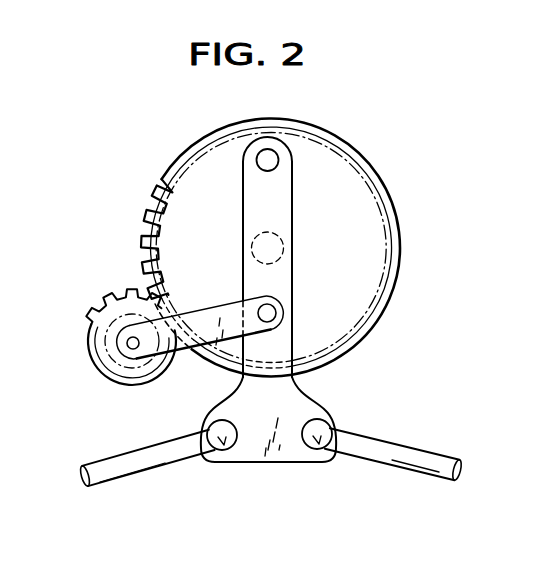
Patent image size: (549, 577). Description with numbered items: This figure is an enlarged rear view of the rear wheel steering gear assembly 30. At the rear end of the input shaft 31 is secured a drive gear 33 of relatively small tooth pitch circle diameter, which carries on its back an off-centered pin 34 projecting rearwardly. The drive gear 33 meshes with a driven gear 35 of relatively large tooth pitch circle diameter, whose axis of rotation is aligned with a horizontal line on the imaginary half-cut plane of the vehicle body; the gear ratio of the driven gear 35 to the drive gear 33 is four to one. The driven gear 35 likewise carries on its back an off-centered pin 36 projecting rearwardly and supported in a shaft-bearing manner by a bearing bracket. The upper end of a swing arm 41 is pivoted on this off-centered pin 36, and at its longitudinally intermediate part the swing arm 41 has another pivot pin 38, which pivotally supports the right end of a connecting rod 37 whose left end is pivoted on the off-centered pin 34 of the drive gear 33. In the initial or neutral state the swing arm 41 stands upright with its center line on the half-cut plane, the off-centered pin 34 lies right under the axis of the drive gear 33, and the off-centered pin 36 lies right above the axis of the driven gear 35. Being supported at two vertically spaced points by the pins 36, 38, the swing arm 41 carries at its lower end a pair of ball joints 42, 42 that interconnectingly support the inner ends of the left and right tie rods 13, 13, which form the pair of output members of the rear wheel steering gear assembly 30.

The rear wheel steering gear assembly 30 is at (154, 160).
The input shaft 31 is at (135, 317).
The drive gear 33 is at (100, 357).
The off-centered pin 34 is at (133, 350).
The driven gear 35 is at (374, 197).
The off-centered pin 36 is at (270, 157).
The connecting rod 37 is at (208, 318).
The pivot pin 38 is at (272, 313).
The swing arm 41 is at (292, 229).
The ball joints 42 is at (318, 432).
The tie rods 13 is at (437, 468).